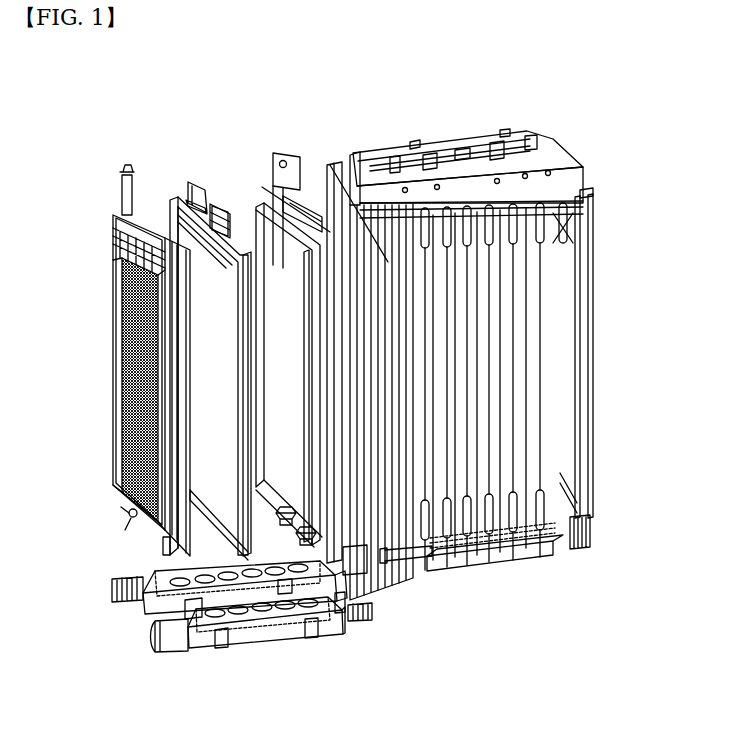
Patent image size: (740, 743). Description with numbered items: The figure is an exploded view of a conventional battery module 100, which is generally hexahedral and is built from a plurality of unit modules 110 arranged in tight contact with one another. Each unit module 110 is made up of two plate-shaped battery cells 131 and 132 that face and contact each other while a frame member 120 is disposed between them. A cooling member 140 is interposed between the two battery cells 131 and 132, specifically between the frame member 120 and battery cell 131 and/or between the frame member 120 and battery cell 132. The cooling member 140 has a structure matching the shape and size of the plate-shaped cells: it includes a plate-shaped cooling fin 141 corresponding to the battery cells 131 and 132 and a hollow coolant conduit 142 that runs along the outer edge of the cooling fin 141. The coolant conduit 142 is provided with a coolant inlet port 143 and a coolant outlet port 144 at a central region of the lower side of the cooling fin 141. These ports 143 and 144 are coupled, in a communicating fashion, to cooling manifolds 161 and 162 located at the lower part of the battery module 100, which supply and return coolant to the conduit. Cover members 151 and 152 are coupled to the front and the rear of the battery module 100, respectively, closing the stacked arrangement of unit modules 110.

The battery module 100 is at (70, 117).
The unit module 110 is at (528, 478).
The frame member 120 is at (262, 210).
The battery cell 131 is at (178, 238).
The battery cell 132 is at (327, 218).
The cooling member 140 is at (245, 245).
The cooling fin 141 is at (297, 408).
The coolant conduit 142 is at (242, 221).
The coolant inlet port 143 is at (283, 523).
The coolant outlet port 144 is at (313, 543).
The cover member 151 is at (113, 240).
The cover member 152 is at (593, 258).
The cooling manifold 161 is at (190, 648).
The cooling manifold 162 is at (143, 605).